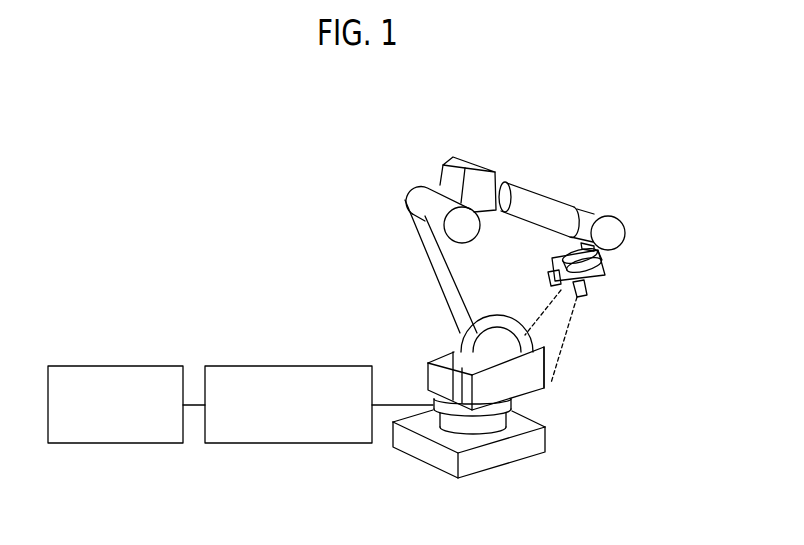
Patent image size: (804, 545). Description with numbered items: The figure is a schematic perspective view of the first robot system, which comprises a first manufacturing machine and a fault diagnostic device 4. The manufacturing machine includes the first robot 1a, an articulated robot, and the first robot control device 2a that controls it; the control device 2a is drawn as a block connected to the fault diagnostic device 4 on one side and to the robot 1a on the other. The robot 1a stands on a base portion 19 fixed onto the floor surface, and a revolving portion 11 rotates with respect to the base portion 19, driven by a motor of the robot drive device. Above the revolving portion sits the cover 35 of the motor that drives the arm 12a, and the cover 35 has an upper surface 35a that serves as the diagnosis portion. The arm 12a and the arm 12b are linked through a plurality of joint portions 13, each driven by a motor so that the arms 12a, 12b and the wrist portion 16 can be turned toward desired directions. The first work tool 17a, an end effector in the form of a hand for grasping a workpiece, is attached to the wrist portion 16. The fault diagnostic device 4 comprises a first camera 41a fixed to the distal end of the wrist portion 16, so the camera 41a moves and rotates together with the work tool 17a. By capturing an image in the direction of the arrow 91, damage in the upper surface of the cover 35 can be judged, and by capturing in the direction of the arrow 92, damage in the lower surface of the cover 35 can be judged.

The first robot 1a is at (460, 157).
The first robot control device 2a is at (293, 445).
The fault diagnostic device 4 is at (74, 445).
The revolving portion 11 is at (437, 410).
The arm 12a is at (436, 268).
The arm 12b is at (537, 204).
The joint portions 13 is at (412, 188).
The wrist portion 16 is at (606, 256).
The first work tool 17a is at (600, 268).
The base portion 19 is at (541, 442).
The cover 35 is at (492, 390).
The upper surface 35a is at (512, 347).
The first camera 41a is at (589, 293).
The arrow 91 is at (513, 333).
The arrow 92 is at (540, 396).